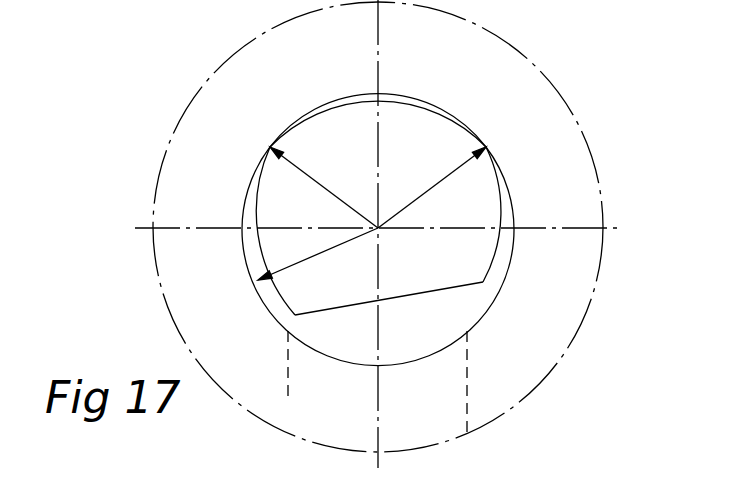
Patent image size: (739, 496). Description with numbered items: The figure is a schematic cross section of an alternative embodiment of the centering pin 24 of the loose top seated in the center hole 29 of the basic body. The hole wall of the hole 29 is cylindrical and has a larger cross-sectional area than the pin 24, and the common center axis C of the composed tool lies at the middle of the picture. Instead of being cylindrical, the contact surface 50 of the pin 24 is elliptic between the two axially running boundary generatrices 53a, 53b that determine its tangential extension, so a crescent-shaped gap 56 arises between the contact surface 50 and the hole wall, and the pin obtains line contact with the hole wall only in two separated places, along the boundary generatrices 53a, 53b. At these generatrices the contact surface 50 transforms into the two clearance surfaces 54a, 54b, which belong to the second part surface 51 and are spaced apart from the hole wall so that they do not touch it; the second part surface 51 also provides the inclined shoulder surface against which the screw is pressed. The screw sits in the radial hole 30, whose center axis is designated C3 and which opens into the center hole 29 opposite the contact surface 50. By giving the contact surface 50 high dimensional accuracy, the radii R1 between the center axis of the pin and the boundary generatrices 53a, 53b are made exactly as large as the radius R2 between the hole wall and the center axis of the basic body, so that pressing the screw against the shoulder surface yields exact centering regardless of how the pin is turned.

The centering pin 24 is at (487, 199).
The center hole 29 is at (483, 316).
The radial hole 30 is at (288, 403).
The contact surface 50 is at (350, 103).
The second part surface 51 is at (398, 297).
The boundary generatrix 53a is at (270, 148).
The boundary generatrix 53b is at (487, 147).
The clearance surface 54a is at (263, 254).
The clearance surface 54b is at (494, 262).
The crescent-shaped gap 56 is at (403, 100).
The center axis C is at (380, 230).
The center axis of the radial hole C3 is at (379, 418).
The radius R1 is at (378, 187).
The radius R2 is at (318, 254).